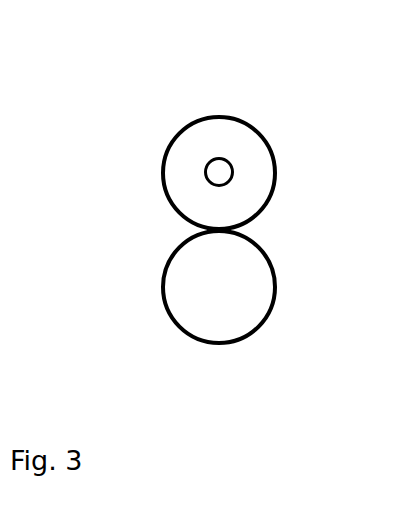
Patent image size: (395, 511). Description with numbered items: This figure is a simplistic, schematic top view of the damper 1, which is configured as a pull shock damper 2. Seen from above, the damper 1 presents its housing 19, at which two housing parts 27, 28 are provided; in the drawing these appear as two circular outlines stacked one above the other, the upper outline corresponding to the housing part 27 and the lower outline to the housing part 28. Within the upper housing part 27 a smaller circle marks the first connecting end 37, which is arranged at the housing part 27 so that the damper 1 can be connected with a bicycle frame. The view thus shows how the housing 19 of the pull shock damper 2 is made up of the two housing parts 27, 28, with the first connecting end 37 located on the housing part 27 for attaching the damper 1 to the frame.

The damper 1 is at (122, 163).
The pull shock damper 2 is at (120, 172).
The housing 19 is at (268, 138).
The housing part 27 is at (277, 178).
The housing part 28 is at (277, 297).
The first connecting end 37 is at (218, 170).